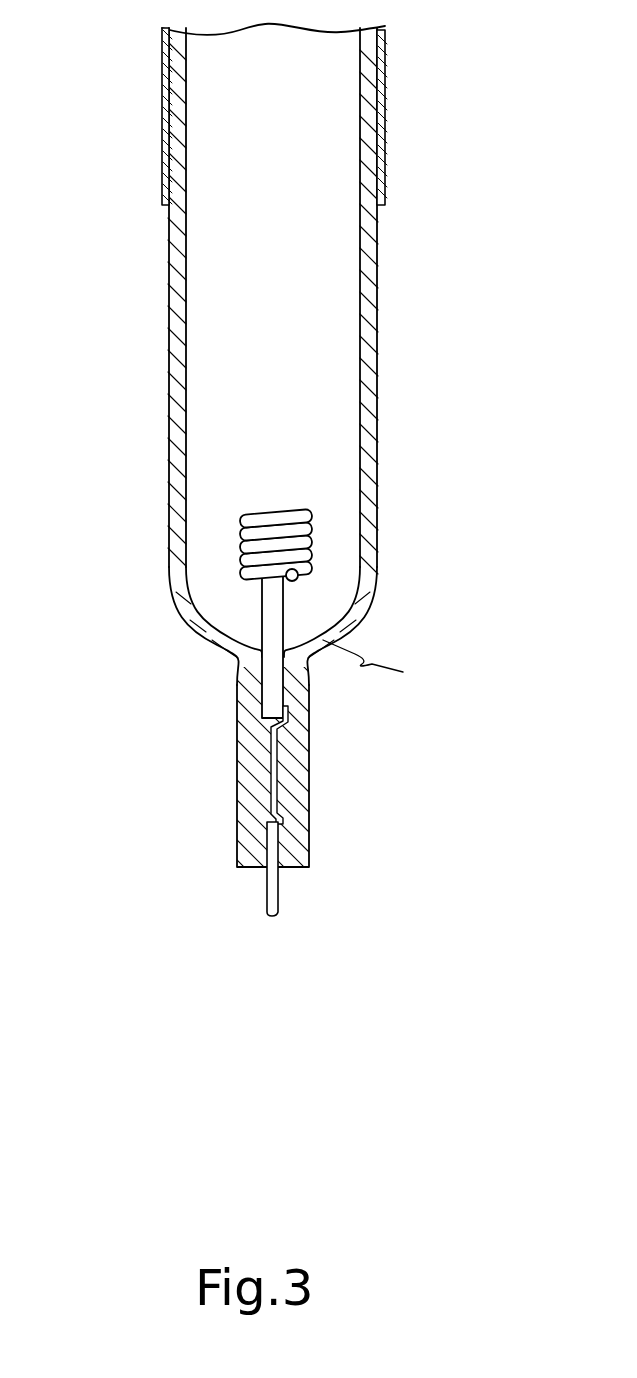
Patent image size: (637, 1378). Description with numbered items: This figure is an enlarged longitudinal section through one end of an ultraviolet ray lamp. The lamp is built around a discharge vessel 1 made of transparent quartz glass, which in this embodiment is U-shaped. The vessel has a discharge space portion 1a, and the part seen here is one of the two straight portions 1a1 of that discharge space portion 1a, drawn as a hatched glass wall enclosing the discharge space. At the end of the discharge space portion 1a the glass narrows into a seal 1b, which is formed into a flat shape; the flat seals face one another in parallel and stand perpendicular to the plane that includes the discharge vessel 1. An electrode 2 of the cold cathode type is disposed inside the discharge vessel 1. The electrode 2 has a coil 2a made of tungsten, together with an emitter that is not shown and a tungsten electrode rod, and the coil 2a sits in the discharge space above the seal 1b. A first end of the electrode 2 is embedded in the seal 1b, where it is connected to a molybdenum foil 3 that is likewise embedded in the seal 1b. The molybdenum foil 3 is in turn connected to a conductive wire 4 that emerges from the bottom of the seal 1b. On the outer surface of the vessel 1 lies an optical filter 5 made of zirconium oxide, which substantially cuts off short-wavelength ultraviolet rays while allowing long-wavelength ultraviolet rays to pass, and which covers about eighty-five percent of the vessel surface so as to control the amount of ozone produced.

The discharge vessel 1 is at (289, 478).
The discharge space portion 1a is at (377, 383).
The straight portion 1a1 is at (377, 238).
The seal 1b is at (309, 748).
The electrode 2 is at (286, 586).
The coil 2a is at (312, 540).
The molybdenum foil 3 is at (270, 763).
The conductive wire 4 is at (265, 912).
The optical filter 5 is at (165, 138).